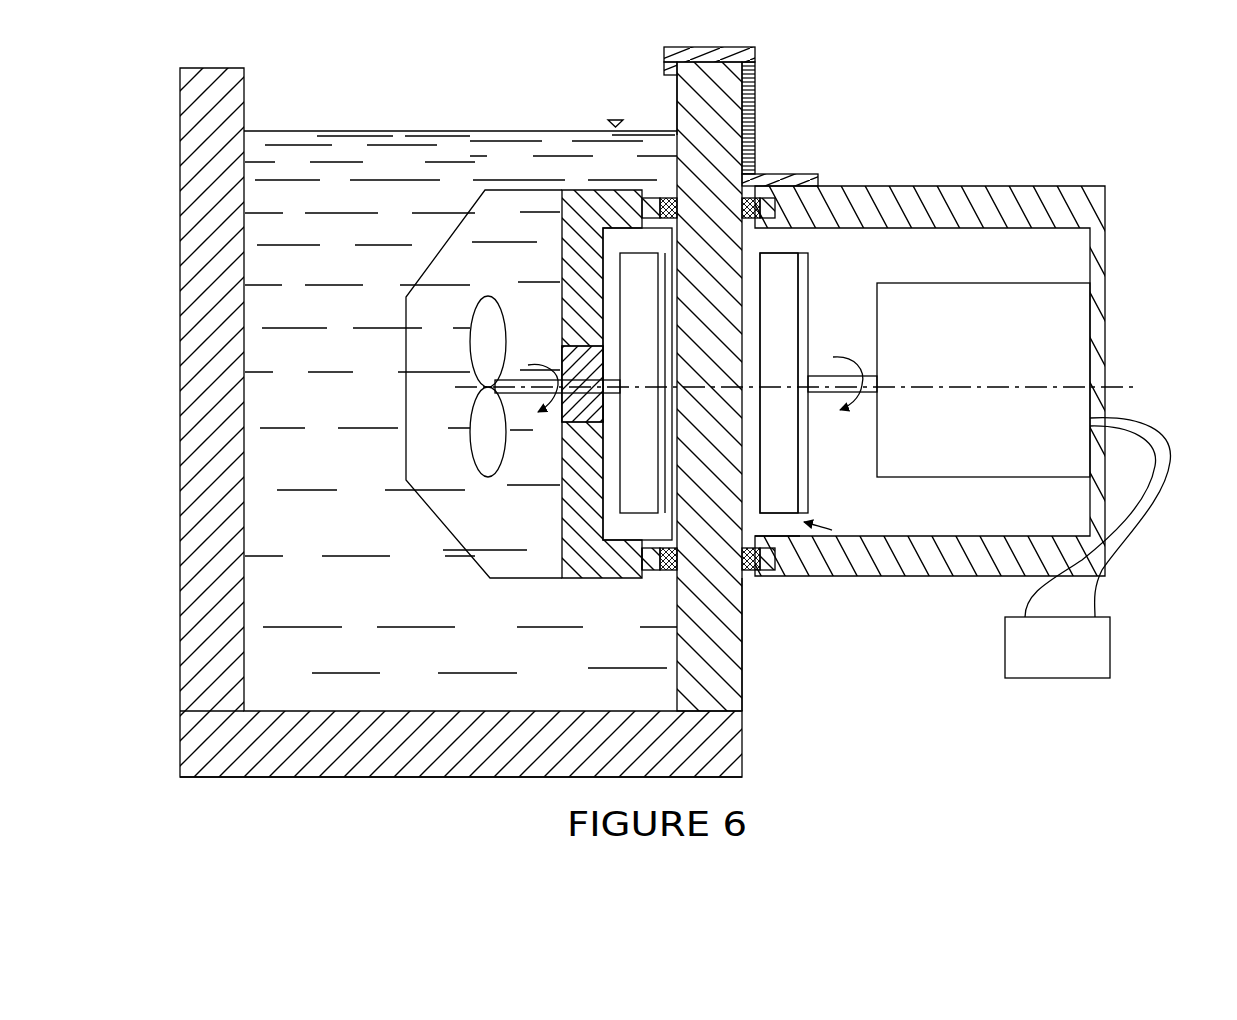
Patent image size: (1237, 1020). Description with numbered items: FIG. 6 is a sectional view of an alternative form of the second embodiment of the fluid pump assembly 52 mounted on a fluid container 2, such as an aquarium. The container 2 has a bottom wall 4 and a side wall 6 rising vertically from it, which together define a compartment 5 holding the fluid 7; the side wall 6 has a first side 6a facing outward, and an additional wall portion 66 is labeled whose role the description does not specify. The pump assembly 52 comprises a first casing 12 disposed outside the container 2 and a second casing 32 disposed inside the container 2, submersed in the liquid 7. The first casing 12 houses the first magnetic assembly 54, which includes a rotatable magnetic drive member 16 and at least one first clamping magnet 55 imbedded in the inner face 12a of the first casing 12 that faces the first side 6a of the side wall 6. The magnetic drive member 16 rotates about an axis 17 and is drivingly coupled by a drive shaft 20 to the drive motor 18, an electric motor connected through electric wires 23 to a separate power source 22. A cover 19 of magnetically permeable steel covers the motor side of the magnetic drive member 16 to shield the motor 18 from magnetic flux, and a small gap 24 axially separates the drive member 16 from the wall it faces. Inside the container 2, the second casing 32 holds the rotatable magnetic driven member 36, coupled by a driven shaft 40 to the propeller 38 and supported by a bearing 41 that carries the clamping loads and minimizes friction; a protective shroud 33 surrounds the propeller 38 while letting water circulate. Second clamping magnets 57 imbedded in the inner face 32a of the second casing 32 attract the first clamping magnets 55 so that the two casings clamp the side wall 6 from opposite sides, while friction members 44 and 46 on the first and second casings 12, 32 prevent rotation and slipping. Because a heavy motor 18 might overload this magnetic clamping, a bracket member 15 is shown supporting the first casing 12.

The container 2 is at (752, 728).
The bottom wall 4 is at (440, 755).
The compartment 5 is at (294, 607).
The side wall 6 is at (723, 119).
The first side of the side wall 6a is at (742, 675).
The fluid 7 is at (290, 170).
The first casing 12 is at (1030, 200).
The inner face of the first casing 12a is at (748, 228).
The bracket member 15 is at (757, 66).
The magnetic drive member 16 is at (790, 432).
The axis 17 is at (1120, 385).
The drive motor 18 is at (1075, 322).
The cover 19 is at (806, 476).
The drive shaft 20 is at (862, 378).
The power source 22 is at (1115, 652).
The electric wires 23 is at (1153, 527).
The gap 24 is at (796, 548).
The second casing 32 is at (550, 572).
The inner face of the second casing 32a is at (673, 228).
The protective shroud 33 is at (437, 517).
The magnetic driven member 36 is at (612, 455).
The propeller 38 is at (476, 444).
The driven shaft 40 is at (518, 380).
The bearing 41 is at (563, 413).
The first friction member 44 is at (750, 583).
The second friction member 46 is at (673, 584).
The fluid pump assembly 52 is at (858, 165).
The first magnetic assembly 54 is at (870, 570).
The first clamping magnet 55 is at (769, 572).
The second clamping magnet 57 is at (640, 562).
The upper wall portion 66 is at (674, 110).